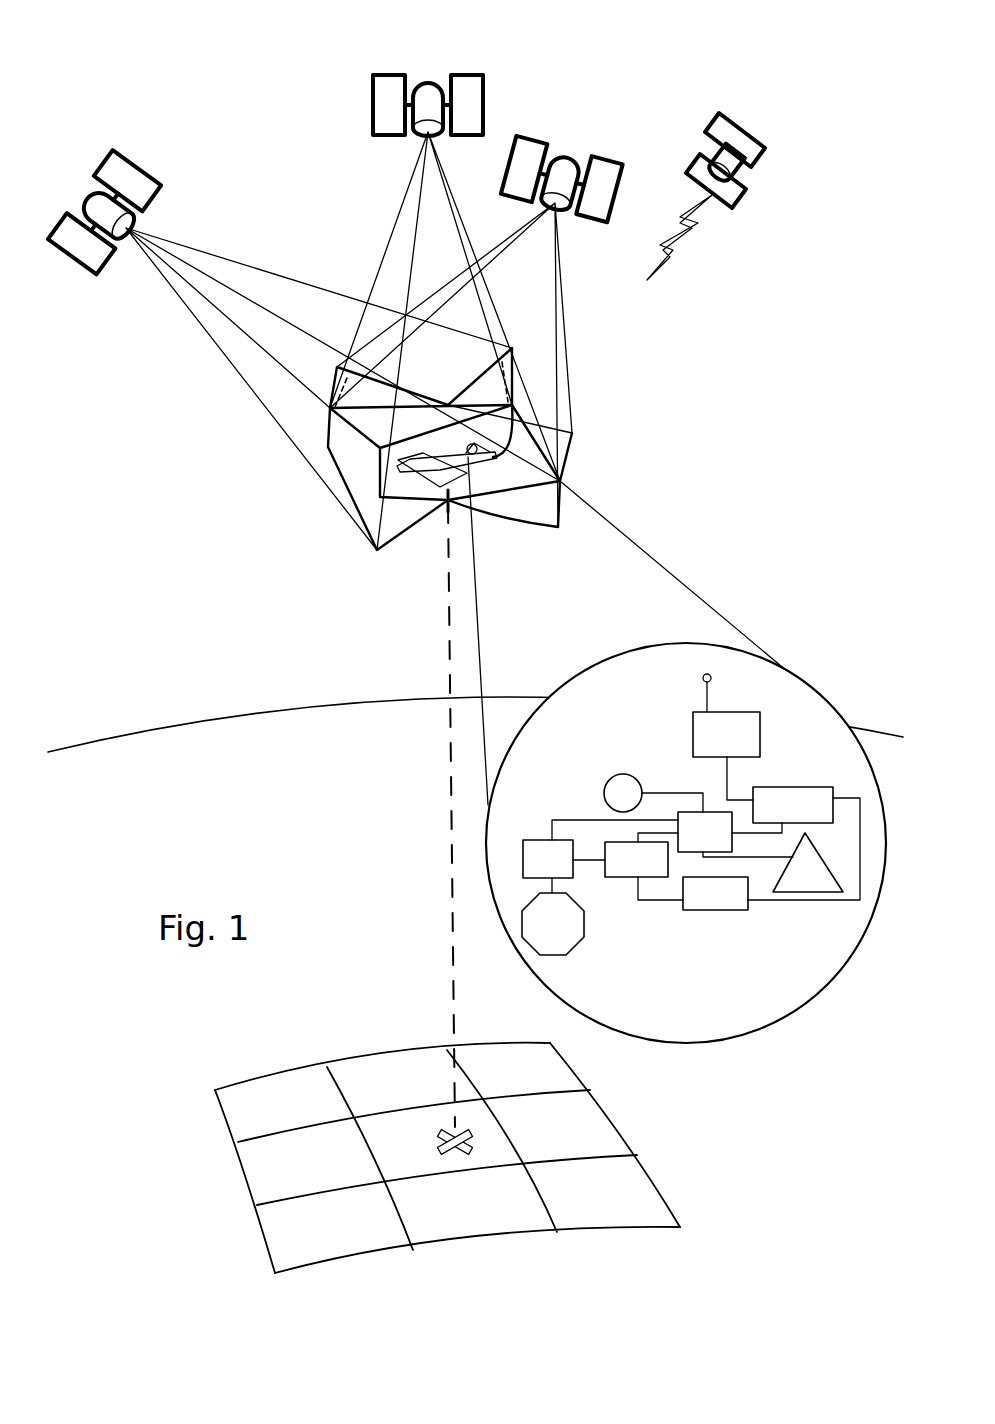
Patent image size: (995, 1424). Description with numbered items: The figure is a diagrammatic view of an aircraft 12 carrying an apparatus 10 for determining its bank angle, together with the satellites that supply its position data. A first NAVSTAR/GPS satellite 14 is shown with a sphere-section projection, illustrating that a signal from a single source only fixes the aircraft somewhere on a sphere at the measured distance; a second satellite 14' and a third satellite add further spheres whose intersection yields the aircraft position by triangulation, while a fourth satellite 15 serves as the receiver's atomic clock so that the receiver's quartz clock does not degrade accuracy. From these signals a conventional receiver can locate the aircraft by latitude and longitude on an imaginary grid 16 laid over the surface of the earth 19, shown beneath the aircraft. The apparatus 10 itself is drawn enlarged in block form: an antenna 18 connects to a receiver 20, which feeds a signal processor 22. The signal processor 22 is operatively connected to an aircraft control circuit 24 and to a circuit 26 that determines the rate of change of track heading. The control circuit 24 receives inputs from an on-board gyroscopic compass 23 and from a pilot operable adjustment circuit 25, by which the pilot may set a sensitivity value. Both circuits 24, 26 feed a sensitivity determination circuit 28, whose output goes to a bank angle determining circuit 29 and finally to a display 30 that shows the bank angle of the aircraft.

The apparatus for determining the bank angle of a moving aircraft 10 is at (805, 710).
The aircraft 12 is at (418, 495).
The first NAVSTAR/GPS satellite 14 is at (304, 320).
The second NAVSTAR/GPS satellite 14' is at (445, 277).
The fourth satellite 15 is at (735, 140).
The imaginary grid 16 is at (400, 1078).
The antenna 18 is at (705, 697).
The earth 19 is at (300, 748).
The receiver 20 is at (693, 745).
The signal processor 22 is at (822, 787).
The gyroscopic compass 23 is at (612, 778).
The aircraft control circuit 24 is at (722, 812).
The pilot operable adjustment circuit 25 is at (815, 892).
The track heading change rate determination circuit 26 is at (700, 910).
The sensitivity determination circuit 28 is at (628, 877).
The bank angle determining circuit 29 is at (546, 840).
The display 30 is at (568, 945).